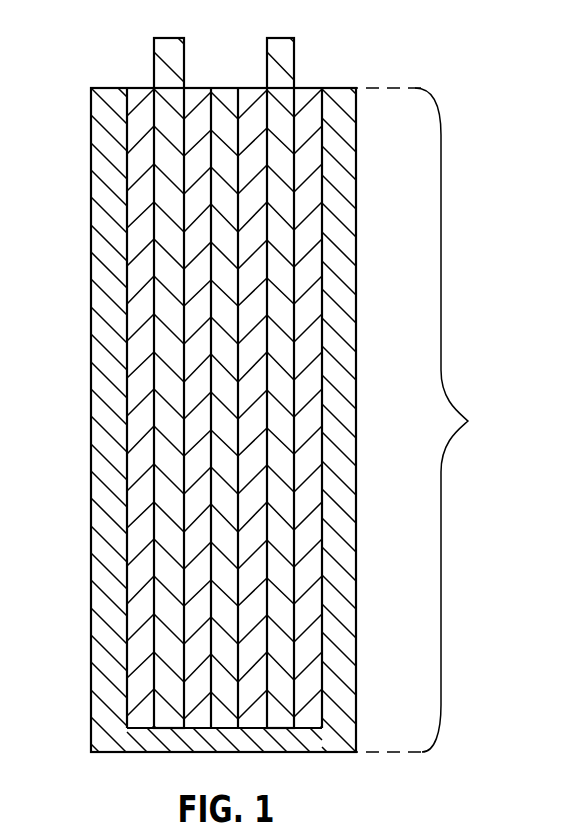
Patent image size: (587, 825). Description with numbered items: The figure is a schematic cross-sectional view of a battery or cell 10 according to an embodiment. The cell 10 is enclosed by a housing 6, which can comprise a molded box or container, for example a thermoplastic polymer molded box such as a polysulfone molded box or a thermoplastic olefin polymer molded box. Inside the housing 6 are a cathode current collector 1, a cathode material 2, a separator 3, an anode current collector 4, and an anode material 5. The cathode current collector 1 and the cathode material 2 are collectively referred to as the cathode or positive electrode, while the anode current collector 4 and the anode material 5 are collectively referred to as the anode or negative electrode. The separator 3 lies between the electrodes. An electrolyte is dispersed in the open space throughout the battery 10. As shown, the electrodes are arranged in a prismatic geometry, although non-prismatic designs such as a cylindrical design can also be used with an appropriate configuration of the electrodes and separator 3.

The cathode current collector 1 is at (297, 67).
The cathode material 2 is at (257, 275).
The separator 3 is at (222, 88).
The anode current collector 4 is at (152, 68).
The anode material 5 is at (185, 387).
The housing 6 is at (348, 438).
The battery or cell 10 is at (435, 420).